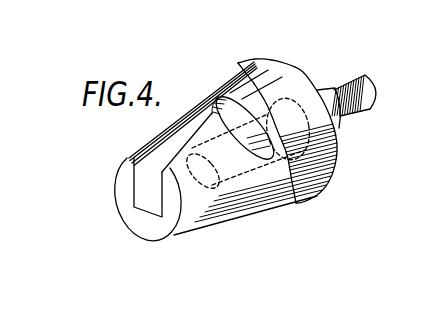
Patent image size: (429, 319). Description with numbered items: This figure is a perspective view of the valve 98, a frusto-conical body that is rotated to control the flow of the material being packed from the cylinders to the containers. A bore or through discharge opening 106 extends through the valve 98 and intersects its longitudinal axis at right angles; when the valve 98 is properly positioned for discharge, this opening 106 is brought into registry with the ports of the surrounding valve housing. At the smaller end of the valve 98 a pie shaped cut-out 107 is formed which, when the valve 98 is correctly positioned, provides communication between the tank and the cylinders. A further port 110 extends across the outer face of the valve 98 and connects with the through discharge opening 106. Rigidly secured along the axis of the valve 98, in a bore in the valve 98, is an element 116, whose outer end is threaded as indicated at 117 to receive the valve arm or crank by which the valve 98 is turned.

The valve 98 is at (192, 90).
The through discharge opening 106 is at (296, 204).
The pie shaped cut-out 107 is at (146, 185).
The port 110 is at (273, 76).
The element 116 is at (338, 128).
The threaded end 117 is at (347, 86).